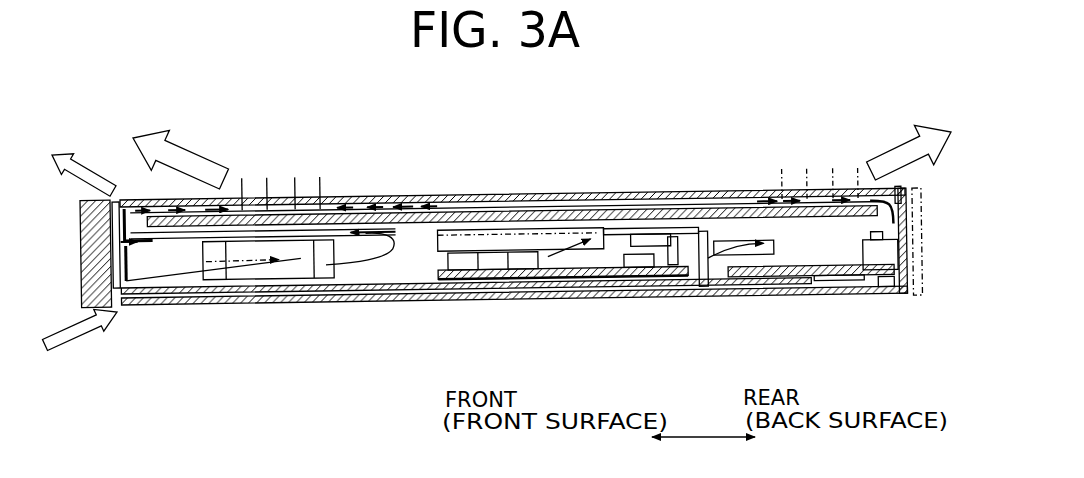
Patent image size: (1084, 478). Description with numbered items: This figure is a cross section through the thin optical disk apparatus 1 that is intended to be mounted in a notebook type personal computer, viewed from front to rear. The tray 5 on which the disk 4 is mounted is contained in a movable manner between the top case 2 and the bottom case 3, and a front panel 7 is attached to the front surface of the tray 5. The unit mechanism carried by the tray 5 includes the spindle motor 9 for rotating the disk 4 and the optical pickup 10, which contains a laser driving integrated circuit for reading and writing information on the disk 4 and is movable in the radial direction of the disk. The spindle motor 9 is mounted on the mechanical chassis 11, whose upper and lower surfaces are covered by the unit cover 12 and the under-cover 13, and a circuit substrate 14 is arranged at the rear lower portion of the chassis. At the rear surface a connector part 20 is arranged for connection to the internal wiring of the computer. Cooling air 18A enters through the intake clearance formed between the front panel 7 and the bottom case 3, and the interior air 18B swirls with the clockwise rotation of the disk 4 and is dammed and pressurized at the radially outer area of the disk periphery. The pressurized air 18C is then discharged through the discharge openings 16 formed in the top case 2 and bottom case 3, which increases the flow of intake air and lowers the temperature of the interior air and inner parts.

The optical disk apparatus 1 is at (500, 145).
The top case 2 is at (585, 195).
The bottom case 3 is at (700, 298).
The disk 4 is at (695, 212).
The tray 5 is at (880, 233).
The front panel 7 is at (80, 257).
The spindle motor 9 is at (362, 262).
The optical pickup 10 is at (341, 230).
The mechanical chassis 11 is at (643, 237).
The unit cover 12 is at (635, 212).
The under-cover 13 is at (427, 247).
The circuit substrate 14 is at (782, 272).
The discharge openings 16 is at (333, 168).
The external air 18A is at (92, 328).
The interior air 18B is at (330, 297).
The discharged air 18C is at (228, 200).
The connector part 20 is at (920, 268).